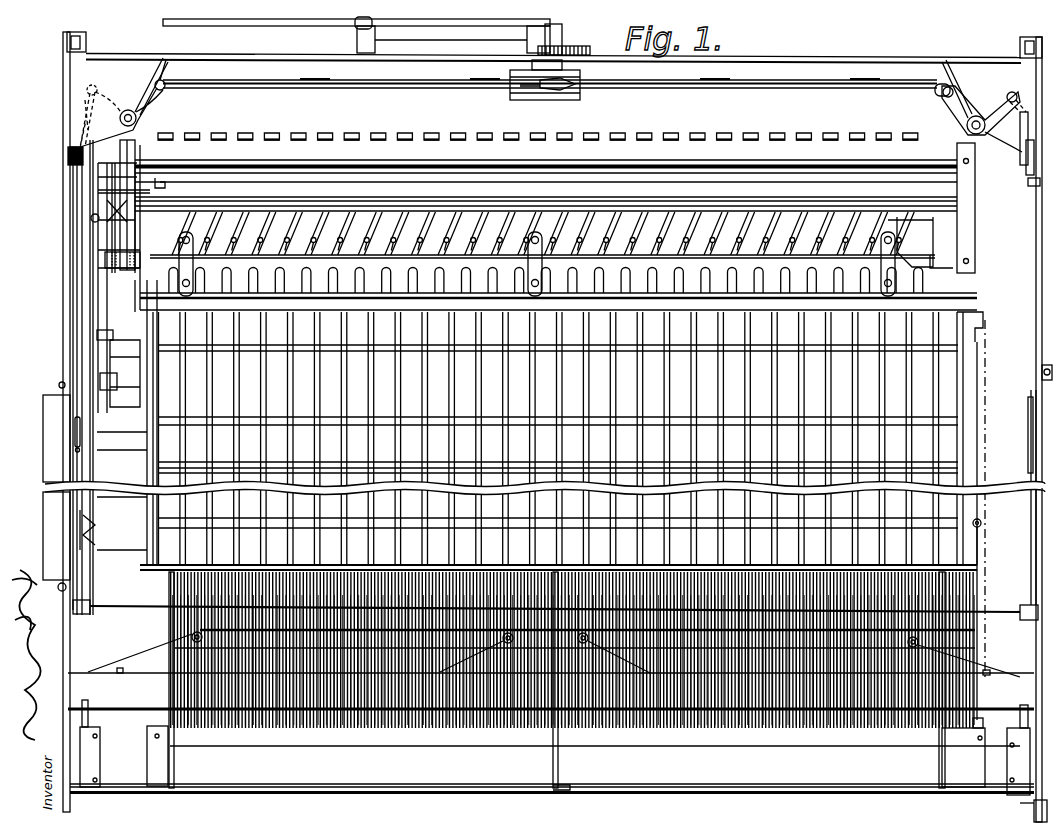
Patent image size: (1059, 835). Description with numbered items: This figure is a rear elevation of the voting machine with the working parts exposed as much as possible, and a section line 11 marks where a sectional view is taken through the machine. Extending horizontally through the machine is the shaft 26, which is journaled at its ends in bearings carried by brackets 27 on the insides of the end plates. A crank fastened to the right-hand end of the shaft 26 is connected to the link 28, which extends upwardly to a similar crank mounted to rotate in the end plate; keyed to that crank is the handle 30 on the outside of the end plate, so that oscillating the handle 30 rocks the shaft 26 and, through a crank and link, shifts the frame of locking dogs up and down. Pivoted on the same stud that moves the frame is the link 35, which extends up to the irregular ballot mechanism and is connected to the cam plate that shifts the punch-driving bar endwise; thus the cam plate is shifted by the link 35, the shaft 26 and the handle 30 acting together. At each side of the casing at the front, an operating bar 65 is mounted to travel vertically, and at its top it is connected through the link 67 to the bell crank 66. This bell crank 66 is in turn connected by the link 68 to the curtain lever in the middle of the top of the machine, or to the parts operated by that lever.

The section line 11 is at (983, 330).
The shaft 26 is at (113, 584).
The bracket 27 is at (80, 614).
The link 28 is at (1031, 532).
The handle 30 is at (1042, 372).
The link 35 is at (97, 262).
The operating bar 65 is at (72, 207).
The bell crank 66 is at (153, 97).
The link 67 is at (80, 112).
The link 68 is at (356, 88).